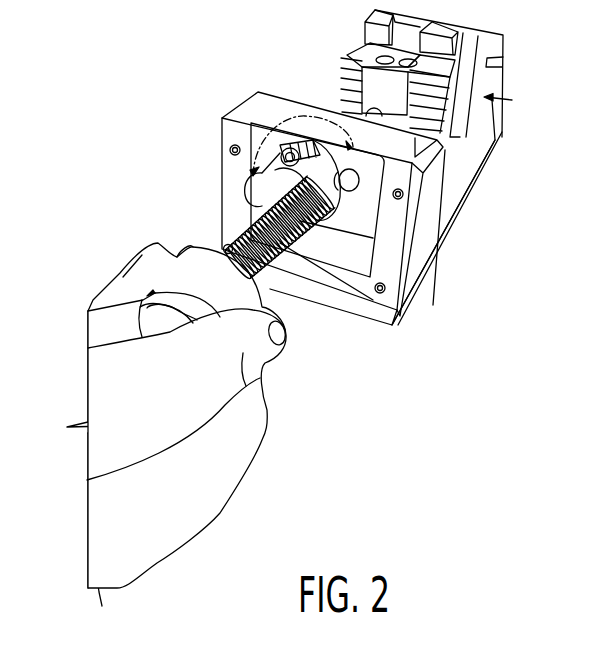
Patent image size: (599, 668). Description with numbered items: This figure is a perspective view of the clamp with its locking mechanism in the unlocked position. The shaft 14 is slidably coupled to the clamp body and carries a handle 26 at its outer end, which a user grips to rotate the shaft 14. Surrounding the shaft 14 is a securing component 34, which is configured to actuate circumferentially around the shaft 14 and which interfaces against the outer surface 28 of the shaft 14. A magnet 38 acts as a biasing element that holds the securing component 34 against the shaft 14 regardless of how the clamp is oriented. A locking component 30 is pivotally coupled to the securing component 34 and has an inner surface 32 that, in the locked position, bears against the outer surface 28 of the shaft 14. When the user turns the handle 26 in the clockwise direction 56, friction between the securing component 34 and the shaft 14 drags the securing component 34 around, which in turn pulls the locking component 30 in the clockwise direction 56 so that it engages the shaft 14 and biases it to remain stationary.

The shaft 14 is at (402, 311).
The handle 26 is at (88, 311).
The outer surface 28 is at (423, 257).
The locking component 30 is at (252, 174).
The inner surface 32 is at (270, 199).
The securing component 34 is at (348, 193).
The magnet 38 is at (362, 177).
The clockwise direction 56 is at (272, 97).